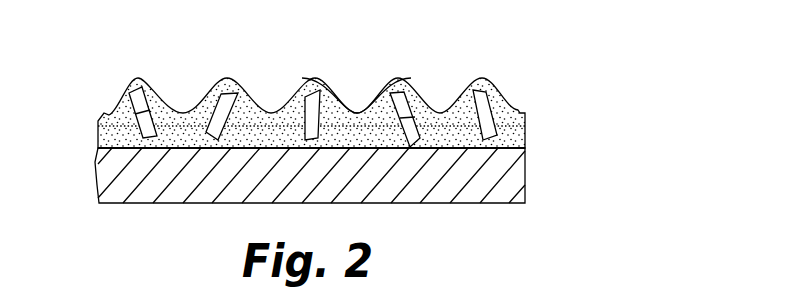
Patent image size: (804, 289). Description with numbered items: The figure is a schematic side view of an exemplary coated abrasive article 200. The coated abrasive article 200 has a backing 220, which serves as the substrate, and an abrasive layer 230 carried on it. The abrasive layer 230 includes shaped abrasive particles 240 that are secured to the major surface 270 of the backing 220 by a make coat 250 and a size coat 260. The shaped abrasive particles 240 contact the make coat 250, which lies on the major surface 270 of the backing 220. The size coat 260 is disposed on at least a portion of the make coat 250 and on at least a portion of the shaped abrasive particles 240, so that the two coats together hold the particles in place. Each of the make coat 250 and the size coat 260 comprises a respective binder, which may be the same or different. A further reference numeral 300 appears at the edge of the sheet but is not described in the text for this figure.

The coated article 200 is at (502, 55).
The substrate 220 is at (172, 190).
The coating 230 is at (535, 127).
The protrusions 240 is at (382, 97).
The particles 250 is at (517, 138).
The top layer 260 is at (120, 105).
The base layer 270 is at (128, 143).
The coated article 300 is at (650, 286).